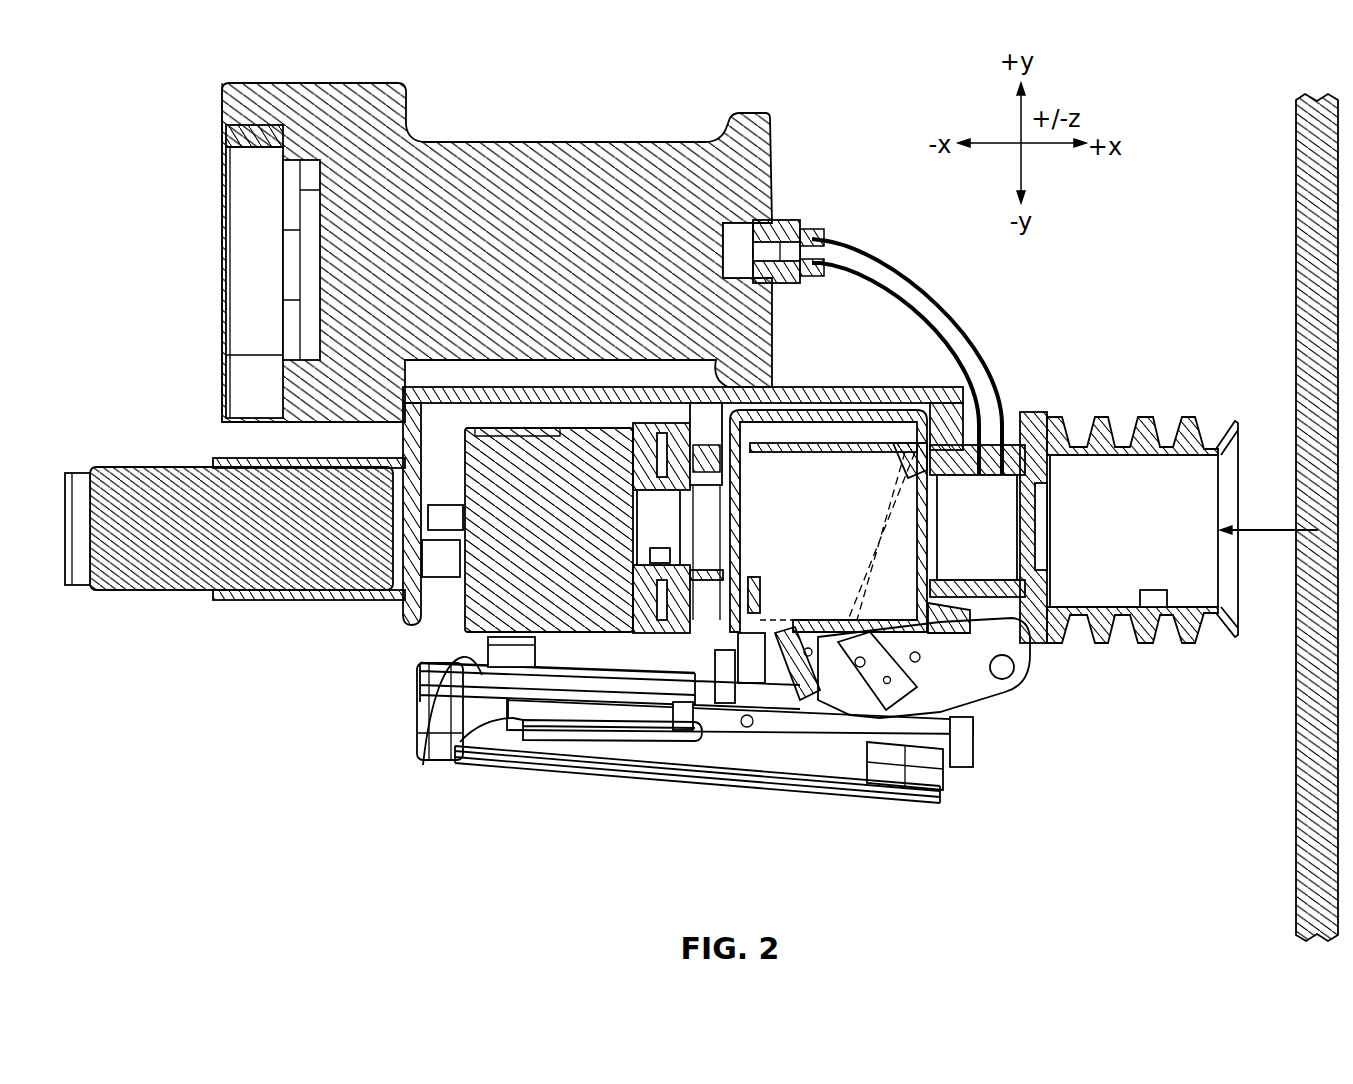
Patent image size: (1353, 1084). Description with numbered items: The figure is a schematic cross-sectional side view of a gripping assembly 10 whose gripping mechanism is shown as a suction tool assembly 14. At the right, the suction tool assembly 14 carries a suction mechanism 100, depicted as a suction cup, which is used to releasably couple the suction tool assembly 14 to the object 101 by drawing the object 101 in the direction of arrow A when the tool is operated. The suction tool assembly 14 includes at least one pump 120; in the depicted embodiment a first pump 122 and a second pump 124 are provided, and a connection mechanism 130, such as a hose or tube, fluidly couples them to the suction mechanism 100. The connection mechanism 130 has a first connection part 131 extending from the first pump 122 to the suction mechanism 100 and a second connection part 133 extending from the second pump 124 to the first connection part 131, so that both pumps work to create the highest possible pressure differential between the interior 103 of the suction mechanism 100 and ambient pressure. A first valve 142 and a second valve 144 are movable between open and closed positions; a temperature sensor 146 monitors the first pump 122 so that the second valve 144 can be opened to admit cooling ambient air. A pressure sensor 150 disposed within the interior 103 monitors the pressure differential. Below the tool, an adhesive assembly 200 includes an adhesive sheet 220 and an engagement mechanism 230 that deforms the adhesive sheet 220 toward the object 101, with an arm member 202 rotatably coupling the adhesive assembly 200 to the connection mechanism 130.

The gripping assembly 10 is at (1204, 84).
The suction tool assembly 14 is at (1152, 684).
The suction mechanism 100 is at (1140, 422).
The object 101 is at (1297, 265).
The interior 103 is at (1182, 494).
The pump 120 is at (242, 248).
The first pump 122 is at (410, 622).
The second pump 124 is at (500, 172).
The connection mechanism 130 is at (995, 324).
The first connection part 131 is at (838, 420).
The second connection part 133 is at (872, 250).
The first valve 142 is at (896, 497).
The second valve 144 is at (781, 615).
The temperature sensor 146 is at (661, 547).
The pressure sensor 150 is at (1156, 590).
The adhesive assembly 200 is at (533, 779).
The arm member 202 is at (838, 686).
The adhesive sheet 220 is at (673, 777).
The engagement mechanism 230 is at (418, 762).
The arrow A is at (1256, 527).